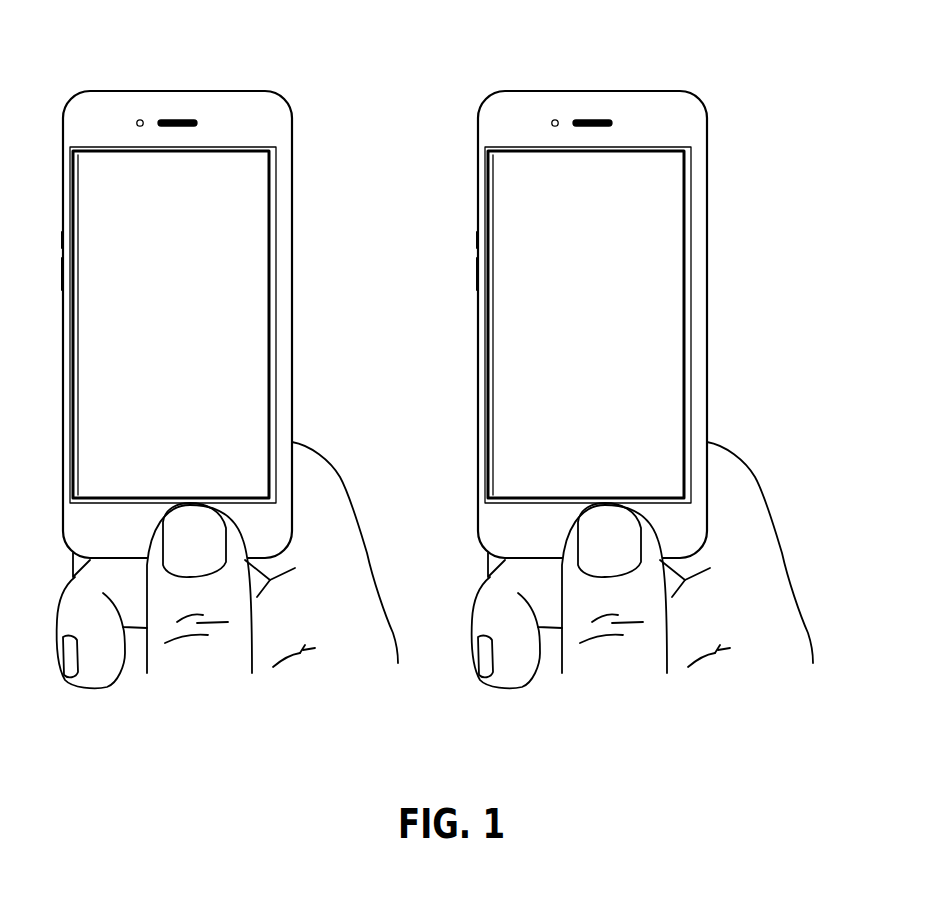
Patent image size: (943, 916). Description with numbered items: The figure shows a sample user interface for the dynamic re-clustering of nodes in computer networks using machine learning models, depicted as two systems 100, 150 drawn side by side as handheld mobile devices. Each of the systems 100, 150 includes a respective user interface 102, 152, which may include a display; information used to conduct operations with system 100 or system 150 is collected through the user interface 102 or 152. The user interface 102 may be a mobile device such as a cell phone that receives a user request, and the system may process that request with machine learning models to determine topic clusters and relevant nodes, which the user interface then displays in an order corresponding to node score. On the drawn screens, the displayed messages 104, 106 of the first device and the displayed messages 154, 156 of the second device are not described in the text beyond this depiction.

The system 100 is at (187, 40).
The user interface 102 is at (222, 132).
The purchase history notification 104 is at (227, 238).
The needed item notification 106 is at (240, 348).
The system 150 is at (642, 352).
The user interface 152 is at (620, 268).
The location inventory notification 154 is at (633, 221).
The substitute item suggestion notification 156 is at (656, 345).